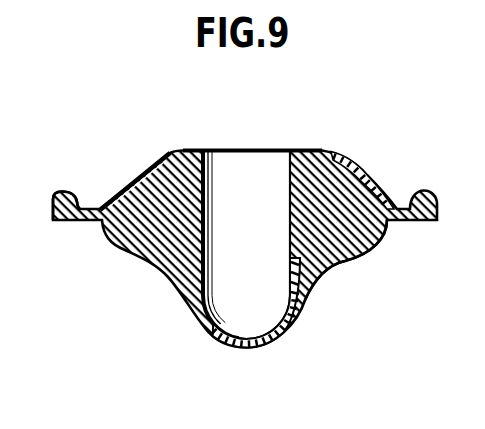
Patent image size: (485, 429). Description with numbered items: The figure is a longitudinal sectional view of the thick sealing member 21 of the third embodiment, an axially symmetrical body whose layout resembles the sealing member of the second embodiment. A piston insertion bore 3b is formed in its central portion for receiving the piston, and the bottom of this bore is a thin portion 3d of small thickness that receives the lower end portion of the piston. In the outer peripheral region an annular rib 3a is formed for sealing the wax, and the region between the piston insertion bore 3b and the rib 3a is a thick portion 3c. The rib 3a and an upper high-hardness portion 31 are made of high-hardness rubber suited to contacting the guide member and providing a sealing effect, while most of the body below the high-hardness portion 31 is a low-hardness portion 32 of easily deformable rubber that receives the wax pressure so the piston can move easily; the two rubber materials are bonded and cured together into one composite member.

The thick sealing member 21 is at (329, 138).
The rib 3a is at (62, 191).
The piston insertion bore 3b is at (245, 173).
The thick portion 3c is at (137, 172).
The thin portion 3d is at (243, 349).
The upper high-hardness portion 31 is at (367, 181).
The low-hardness portion 32 is at (358, 259).